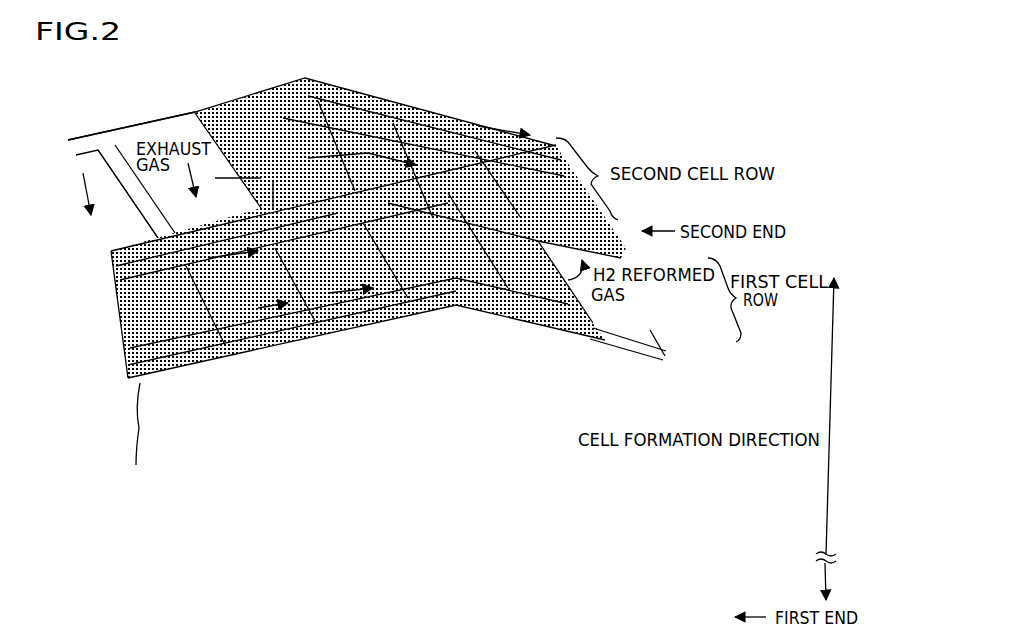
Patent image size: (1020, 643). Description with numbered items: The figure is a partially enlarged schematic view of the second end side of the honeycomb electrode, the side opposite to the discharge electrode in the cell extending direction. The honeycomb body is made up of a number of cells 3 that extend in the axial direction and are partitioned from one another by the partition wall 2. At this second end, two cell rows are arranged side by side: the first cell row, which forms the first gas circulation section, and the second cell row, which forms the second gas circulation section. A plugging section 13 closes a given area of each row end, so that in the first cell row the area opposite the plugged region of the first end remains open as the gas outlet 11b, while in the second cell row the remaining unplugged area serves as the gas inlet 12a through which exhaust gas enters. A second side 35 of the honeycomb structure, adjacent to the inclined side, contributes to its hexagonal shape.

The partition wall 2 is at (127, 190).
The cell 3 is at (123, 140).
The gas outlet 11b is at (640, 320).
The gas inlet 12a is at (162, 128).
The plugging section 13 is at (420, 123).
The second side 35 is at (135, 437).